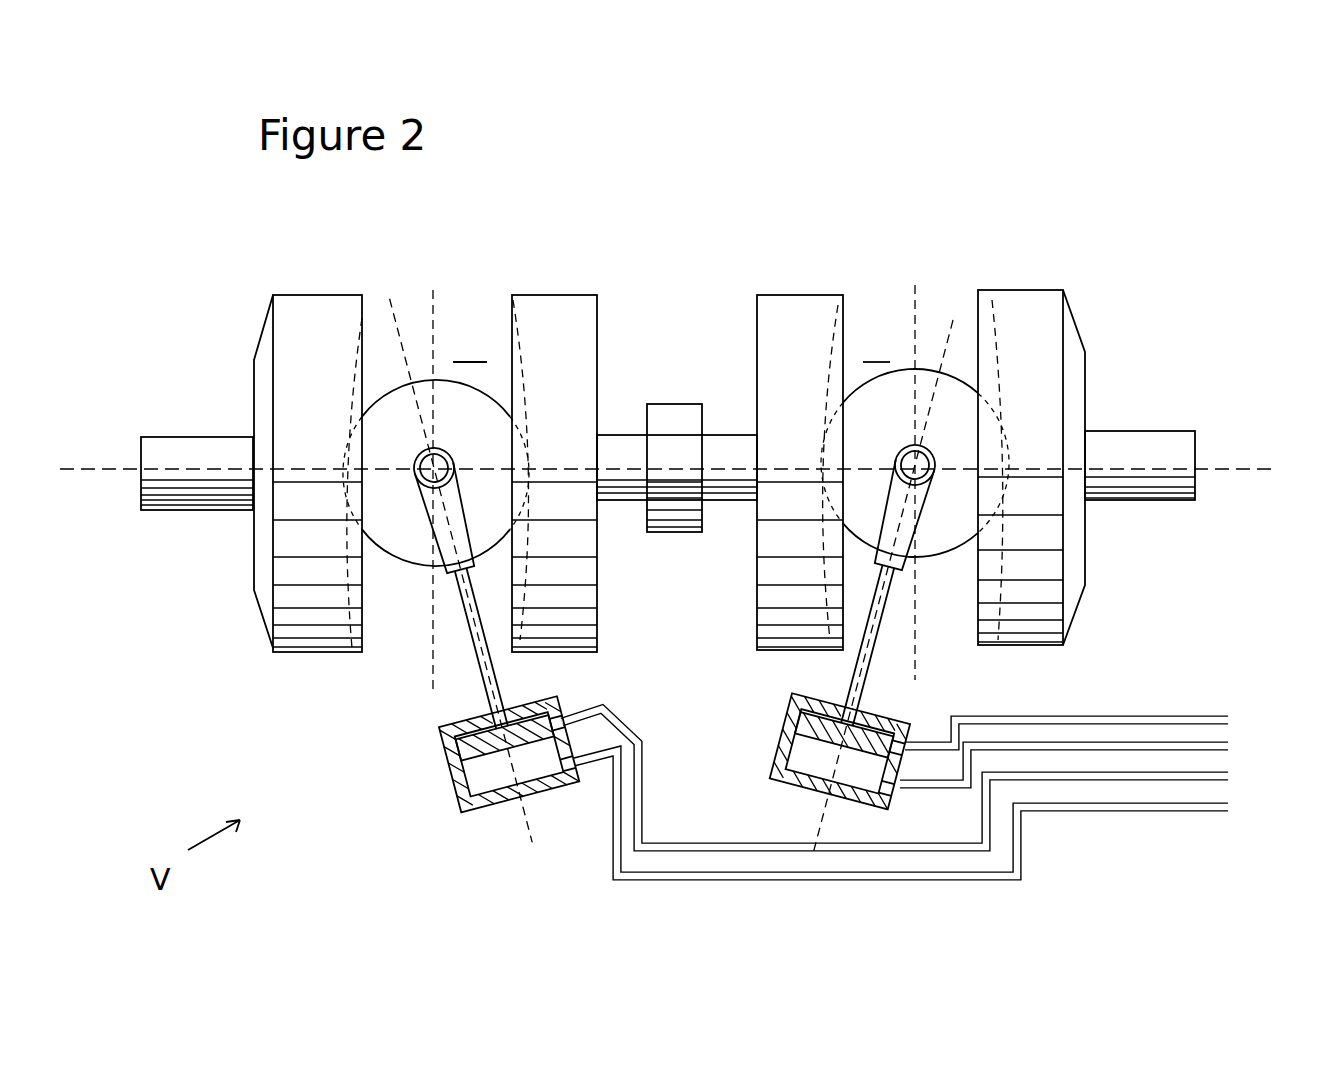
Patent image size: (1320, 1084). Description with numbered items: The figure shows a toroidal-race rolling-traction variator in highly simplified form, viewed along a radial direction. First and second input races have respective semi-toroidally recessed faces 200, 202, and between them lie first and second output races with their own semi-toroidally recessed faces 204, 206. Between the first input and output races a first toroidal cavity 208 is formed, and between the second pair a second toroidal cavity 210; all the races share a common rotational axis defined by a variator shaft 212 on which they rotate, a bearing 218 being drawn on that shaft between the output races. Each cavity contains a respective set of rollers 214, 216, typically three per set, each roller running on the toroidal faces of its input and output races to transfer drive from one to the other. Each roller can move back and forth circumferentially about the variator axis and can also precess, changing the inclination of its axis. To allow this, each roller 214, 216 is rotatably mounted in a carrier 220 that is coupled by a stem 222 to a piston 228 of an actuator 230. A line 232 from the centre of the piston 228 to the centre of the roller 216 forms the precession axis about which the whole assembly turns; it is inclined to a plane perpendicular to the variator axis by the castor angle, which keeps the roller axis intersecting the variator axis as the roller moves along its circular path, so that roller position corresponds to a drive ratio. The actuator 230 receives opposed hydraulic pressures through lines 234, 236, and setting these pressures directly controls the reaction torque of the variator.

The semi-toroidally recessed face 200 is at (343, 502).
The semi-toroidally recessed face 202 is at (1026, 497).
The semi-toroidally recessed face 204 is at (538, 443).
The semi-toroidally recessed face 206 is at (837, 441).
The first toroidal cavity 208 is at (486, 563).
The second toroidal cavity 210 is at (891, 393).
The variator shaft 212 is at (1140, 430).
The rollers 214 is at (398, 568).
The rollers 216 is at (928, 368).
The bearing 218 is at (672, 404).
The carrier 220 is at (938, 541).
The stem 222 is at (876, 647).
The piston 228 is at (794, 710).
The actuator 230 is at (806, 694).
The precession axis 232 is at (950, 567).
The line 234 is at (1178, 715).
The line 236 is at (1205, 742).